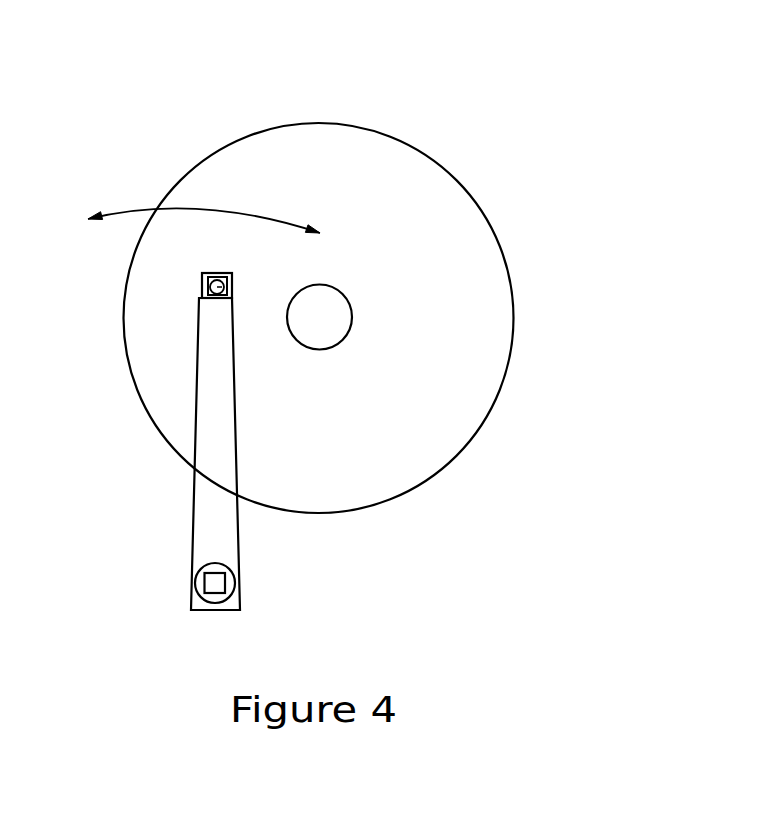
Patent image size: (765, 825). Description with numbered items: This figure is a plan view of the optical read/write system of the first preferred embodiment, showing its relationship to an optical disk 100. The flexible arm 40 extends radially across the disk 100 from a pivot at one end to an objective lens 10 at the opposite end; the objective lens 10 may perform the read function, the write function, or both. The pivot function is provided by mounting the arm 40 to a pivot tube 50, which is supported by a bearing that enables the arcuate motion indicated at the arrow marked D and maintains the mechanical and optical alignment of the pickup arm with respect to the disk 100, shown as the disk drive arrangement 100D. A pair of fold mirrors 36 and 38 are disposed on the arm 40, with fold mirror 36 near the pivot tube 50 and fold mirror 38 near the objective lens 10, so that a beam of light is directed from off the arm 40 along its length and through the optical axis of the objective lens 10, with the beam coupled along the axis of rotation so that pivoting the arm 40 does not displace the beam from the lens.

The disk 100 is at (478, 233).
The disk drive 100D is at (165, 510).
The objective lens 10 is at (232, 281).
The fold mirror 38 is at (205, 295).
The arm 40 is at (207, 433).
The pivot tube 50 is at (198, 597).
The fold mirror 36 is at (225, 583).